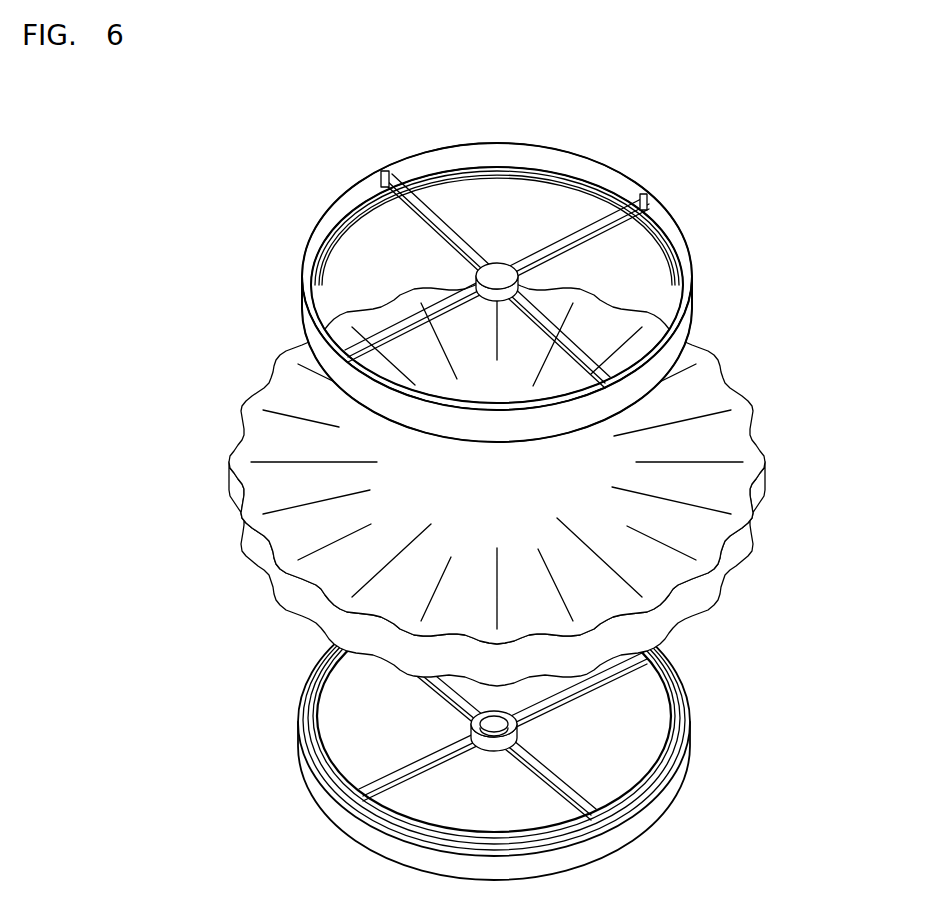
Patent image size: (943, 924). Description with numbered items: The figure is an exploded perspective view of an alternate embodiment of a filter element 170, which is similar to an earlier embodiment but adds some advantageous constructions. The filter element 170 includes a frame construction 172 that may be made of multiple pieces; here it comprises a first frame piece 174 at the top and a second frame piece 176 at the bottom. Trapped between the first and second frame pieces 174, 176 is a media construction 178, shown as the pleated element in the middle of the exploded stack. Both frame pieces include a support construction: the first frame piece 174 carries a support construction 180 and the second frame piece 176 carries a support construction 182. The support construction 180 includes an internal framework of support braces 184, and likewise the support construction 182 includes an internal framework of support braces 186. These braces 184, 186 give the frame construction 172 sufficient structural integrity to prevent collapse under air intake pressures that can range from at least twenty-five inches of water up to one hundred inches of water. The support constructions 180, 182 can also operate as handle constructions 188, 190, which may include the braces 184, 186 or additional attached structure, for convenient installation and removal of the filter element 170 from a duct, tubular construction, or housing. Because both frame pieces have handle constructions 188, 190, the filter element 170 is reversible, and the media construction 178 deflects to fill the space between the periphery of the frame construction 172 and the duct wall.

The filter element 170 is at (258, 247).
The frame construction 172 is at (560, 265).
The first frame piece 174 is at (560, 148).
The second frame piece 176 is at (546, 748).
The media construction 178 is at (755, 394).
The support construction 180 is at (478, 242).
The support construction 182 is at (508, 774).
The support braces 184 is at (417, 215).
The support braces 186 is at (407, 768).
The handle construction 188 is at (507, 248).
The handle construction 190 is at (622, 700).